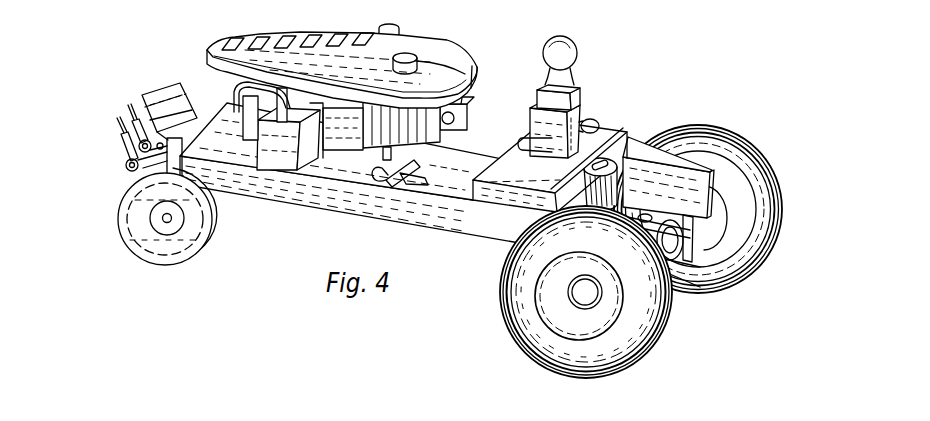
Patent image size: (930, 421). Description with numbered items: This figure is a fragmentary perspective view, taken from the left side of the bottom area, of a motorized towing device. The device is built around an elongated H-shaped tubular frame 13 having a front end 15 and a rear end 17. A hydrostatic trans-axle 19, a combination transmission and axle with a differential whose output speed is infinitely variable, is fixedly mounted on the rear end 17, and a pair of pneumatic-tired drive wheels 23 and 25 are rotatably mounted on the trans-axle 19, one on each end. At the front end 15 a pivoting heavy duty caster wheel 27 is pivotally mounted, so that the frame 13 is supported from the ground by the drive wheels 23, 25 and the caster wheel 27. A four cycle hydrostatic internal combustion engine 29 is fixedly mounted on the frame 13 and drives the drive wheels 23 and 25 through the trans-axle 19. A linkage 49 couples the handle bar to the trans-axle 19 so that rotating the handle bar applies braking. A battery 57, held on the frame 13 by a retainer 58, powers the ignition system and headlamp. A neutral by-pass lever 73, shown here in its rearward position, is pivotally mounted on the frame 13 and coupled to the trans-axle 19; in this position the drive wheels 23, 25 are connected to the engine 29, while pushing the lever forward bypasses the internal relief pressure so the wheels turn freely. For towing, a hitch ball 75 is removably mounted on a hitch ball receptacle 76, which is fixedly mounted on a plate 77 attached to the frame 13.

The frame 13 is at (415, 212).
The front end 15 is at (121, 71).
The rear end 17 is at (687, 234).
The trans-axle 19 is at (702, 275).
The drive wheel 23 is at (702, 148).
The drive wheel 25 is at (640, 323).
The caster wheel 27 is at (190, 246).
The engine 29 is at (478, 100).
The linkage 49 is at (107, 163).
The battery 57 is at (303, 128).
The retainer 58 is at (270, 116).
The neutral by-pass lever 73 is at (378, 178).
The hitch ball 75 is at (582, 45).
The hitch ball receptacle 76 is at (568, 90).
The plate 77 is at (500, 172).